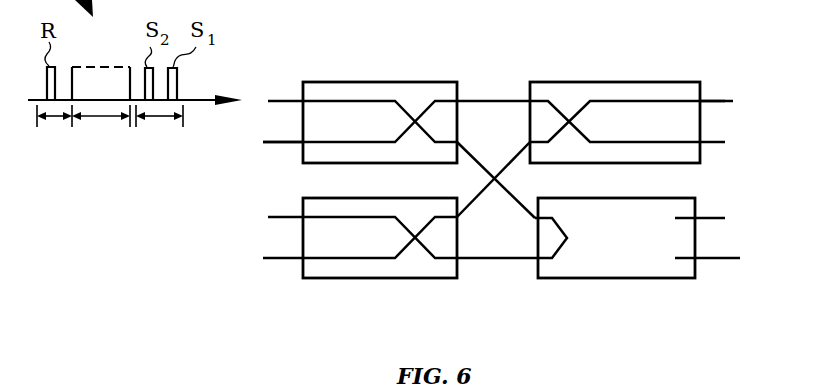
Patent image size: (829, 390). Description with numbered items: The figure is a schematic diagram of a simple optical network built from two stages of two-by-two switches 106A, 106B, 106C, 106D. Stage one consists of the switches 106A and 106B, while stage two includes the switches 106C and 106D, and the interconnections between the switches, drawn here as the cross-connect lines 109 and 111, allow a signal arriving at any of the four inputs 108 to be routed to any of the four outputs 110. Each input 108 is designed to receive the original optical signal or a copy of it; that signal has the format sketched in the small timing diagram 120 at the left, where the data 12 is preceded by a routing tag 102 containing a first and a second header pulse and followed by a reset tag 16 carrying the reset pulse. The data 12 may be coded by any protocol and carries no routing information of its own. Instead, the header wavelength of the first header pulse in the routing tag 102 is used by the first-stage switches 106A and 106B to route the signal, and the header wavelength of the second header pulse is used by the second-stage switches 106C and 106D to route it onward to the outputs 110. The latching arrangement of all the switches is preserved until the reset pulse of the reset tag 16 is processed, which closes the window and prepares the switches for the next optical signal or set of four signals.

The reset tag 16 is at (49, 119).
The data 12 is at (101, 119).
The routing tag 102 is at (155, 119).
The timing diagram 120 is at (18, 371).
The 2×2 switch 106A is at (388, 82).
The 2×2 switch 106B is at (372, 282).
The 2×2 switch 106C is at (588, 82).
The 2×2 switch 106D is at (572, 282).
The inputs 108 is at (276, 145).
The cross-connect fiber 109 is at (458, 100).
The connecting fiber 111 is at (530, 100).
The outputs 110 is at (710, 99).